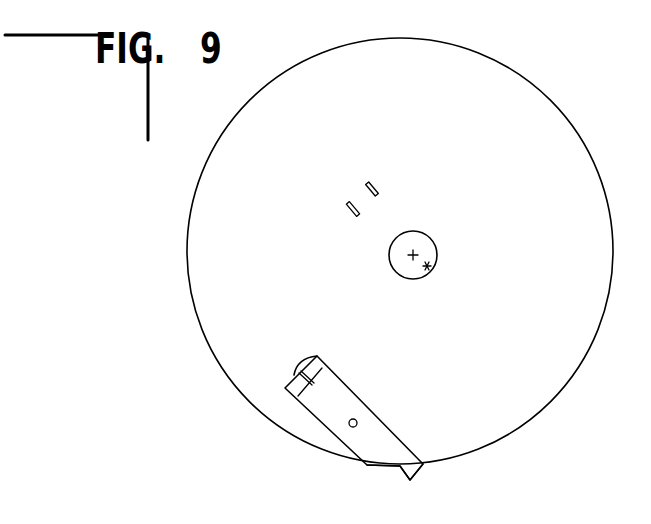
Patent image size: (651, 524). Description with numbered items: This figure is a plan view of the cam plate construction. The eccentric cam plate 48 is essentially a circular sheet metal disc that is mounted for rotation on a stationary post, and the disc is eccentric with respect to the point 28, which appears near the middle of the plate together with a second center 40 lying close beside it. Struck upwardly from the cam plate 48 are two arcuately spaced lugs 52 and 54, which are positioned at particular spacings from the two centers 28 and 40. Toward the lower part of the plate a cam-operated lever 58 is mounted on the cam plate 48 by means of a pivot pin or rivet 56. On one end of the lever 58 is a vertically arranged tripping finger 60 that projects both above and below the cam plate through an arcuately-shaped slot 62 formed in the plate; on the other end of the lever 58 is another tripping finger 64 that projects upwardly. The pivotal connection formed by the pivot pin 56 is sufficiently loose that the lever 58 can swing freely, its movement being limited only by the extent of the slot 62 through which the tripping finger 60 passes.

The eccentric cam plate 48 is at (228, 126).
The point 28 is at (418, 250).
The center 40 is at (431, 270).
The lug 52 is at (349, 216).
The lug 54 is at (378, 187).
The pivot pin or rivet 56 is at (358, 420).
The cam-operated lever 58 is at (359, 398).
The tripping finger 60 is at (294, 378).
The arcuately-shaped slot 62 is at (309, 358).
The tripping finger 64 is at (404, 476).